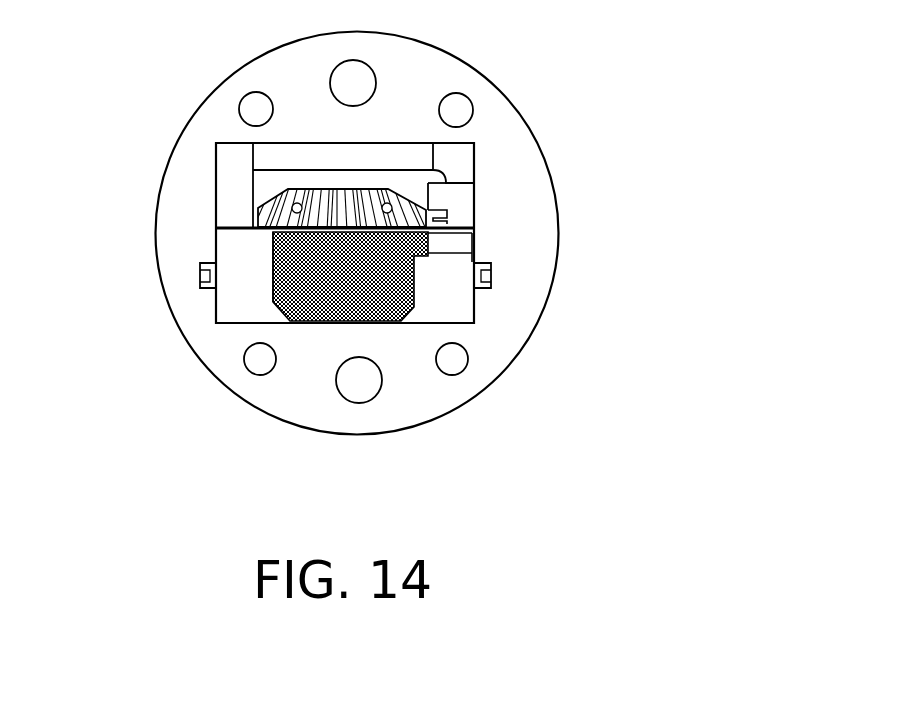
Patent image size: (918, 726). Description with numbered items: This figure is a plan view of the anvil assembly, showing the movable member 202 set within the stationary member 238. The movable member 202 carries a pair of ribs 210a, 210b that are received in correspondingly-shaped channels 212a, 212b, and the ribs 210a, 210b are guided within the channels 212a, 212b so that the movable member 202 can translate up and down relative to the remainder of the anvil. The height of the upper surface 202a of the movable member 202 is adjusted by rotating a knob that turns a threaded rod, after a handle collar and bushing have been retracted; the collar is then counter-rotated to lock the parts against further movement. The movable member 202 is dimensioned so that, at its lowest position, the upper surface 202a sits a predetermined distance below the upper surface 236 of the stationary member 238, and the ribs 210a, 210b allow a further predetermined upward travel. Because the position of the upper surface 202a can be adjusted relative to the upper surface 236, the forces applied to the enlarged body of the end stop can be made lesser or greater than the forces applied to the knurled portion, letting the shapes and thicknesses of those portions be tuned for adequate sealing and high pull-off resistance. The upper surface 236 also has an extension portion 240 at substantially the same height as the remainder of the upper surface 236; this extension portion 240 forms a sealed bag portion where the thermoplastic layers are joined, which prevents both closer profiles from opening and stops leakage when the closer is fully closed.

The movable member 202 is at (458, 300).
The upper surface 202a is at (306, 322).
The rib 210a is at (490, 268).
The rib 210b is at (207, 288).
The channel 212a is at (580, 229).
The channel 212b is at (212, 262).
The upper surface 236 is at (394, 113).
The stationary member 238 is at (414, 149).
The extension portion 240 is at (545, 179).